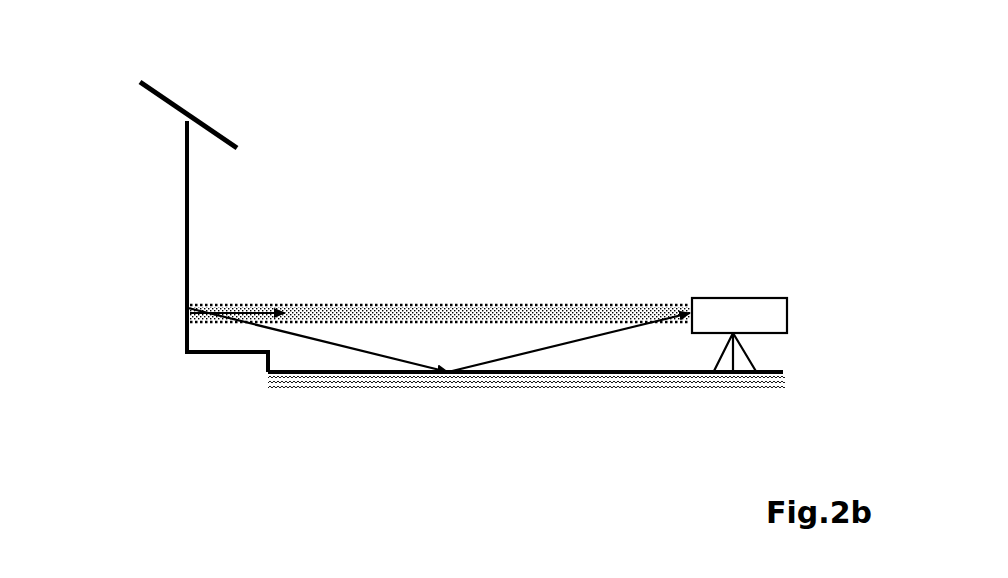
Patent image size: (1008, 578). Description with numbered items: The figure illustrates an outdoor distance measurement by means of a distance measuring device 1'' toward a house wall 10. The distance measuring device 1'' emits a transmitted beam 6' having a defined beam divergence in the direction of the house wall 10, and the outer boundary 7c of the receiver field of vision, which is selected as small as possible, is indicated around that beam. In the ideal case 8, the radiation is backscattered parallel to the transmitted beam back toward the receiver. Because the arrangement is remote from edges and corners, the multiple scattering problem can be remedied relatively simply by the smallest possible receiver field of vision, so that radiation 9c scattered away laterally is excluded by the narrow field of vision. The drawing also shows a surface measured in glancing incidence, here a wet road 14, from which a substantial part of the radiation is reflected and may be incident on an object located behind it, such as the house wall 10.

The house wall 10 is at (177, 193).
The outer boundary of receiver field of vision 7c is at (350, 305).
The transmitted beam 6' is at (506, 242).
The ideal case 8 is at (258, 326).
The laterally scattered radiation 9c is at (330, 346).
The wet road 14 is at (470, 375).
The distance measuring device 1'' is at (761, 308).